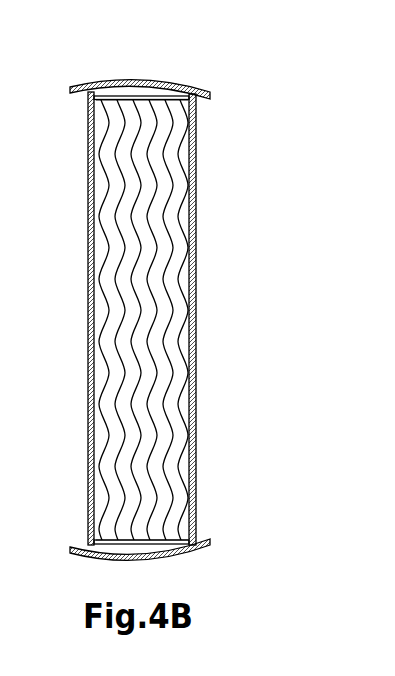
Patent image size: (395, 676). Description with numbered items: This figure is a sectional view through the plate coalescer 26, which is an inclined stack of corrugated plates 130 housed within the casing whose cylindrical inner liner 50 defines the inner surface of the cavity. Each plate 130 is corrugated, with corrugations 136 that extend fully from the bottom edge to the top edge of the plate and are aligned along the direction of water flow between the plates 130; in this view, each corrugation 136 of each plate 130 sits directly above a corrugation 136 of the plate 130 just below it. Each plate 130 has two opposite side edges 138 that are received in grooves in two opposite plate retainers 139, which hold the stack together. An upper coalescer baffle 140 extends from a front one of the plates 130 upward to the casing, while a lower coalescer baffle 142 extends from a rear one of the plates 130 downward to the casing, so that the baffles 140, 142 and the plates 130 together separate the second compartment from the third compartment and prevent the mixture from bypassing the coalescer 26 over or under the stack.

The plate coalescer 26 is at (135, 308).
The inner liner 50 is at (163, 82).
The corrugated plates 130 is at (115, 432).
The corrugations 136 is at (113, 437).
The side edges 138 is at (133, 101).
The plate retainers 139 is at (120, 95).
The upper coalescer baffle 140 is at (88, 217).
The lower coalescer baffle 142 is at (197, 268).